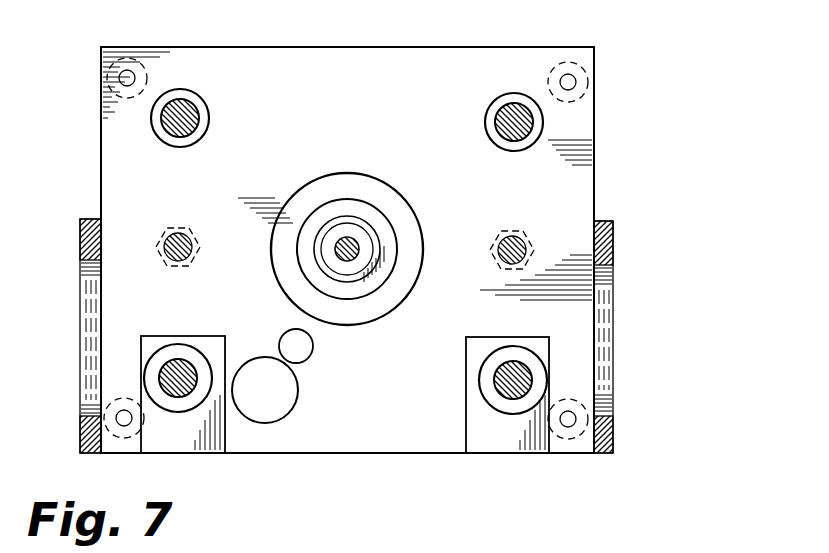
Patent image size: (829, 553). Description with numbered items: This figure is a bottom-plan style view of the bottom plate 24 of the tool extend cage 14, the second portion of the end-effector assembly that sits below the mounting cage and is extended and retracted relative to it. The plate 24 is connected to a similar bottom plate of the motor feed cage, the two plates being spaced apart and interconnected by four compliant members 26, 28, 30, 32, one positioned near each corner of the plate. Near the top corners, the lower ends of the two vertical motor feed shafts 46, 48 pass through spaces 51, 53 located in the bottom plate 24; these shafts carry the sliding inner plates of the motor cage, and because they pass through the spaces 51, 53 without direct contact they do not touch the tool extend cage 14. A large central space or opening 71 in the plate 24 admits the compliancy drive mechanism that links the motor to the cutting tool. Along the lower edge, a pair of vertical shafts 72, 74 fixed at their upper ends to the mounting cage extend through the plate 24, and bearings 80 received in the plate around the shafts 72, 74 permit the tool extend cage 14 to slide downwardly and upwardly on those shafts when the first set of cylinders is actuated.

The tool extend cage 14 is at (616, 256).
The bottom plate of the tool extend cage 24 is at (371, 113).
The compliant member 26 is at (590, 394).
The compliant member 28 is at (584, 68).
The compliant member 30 is at (150, 60).
The compliant member 32 is at (112, 398).
The motor feed shaft 46 is at (178, 113).
The motor feed shaft 48 is at (517, 112).
The space 51 is at (158, 125).
The space 53 is at (540, 126).
The opening 71 is at (400, 200).
The vertical shaft 72 is at (513, 397).
The vertical shaft 74 is at (180, 392).
The bearing 80 is at (162, 360).